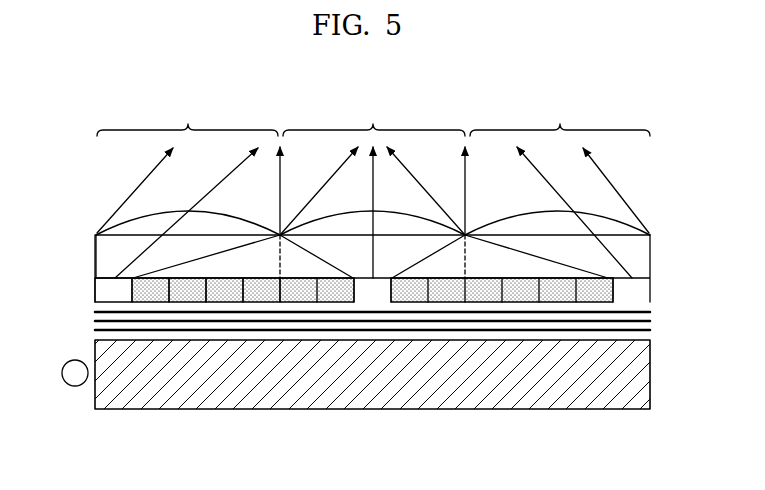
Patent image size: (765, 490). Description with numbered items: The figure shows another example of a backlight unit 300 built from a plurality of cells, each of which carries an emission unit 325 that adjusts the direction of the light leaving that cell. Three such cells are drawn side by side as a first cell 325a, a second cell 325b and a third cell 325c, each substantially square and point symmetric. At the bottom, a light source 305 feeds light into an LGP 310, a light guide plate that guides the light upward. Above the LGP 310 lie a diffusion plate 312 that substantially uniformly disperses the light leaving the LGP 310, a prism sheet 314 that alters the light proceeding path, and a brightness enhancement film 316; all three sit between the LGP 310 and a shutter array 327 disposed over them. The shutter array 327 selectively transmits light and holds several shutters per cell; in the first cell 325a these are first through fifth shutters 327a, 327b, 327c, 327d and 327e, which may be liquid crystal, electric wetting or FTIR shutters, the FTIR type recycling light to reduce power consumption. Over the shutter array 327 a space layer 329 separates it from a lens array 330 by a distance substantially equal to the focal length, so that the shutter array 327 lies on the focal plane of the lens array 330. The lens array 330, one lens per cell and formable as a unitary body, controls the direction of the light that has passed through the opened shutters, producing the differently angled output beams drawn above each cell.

The backlight unit 300 is at (632, 97).
The light source 305 is at (70, 385).
The LGP 310 is at (645, 375).
The diffusion plate 312 is at (650, 330).
The prism sheet 314 is at (650, 321).
The brightness enhancement film 316 is at (650, 312).
The emission unit 325 is at (645, 260).
The first cell 325a is at (188, 191).
The second cell 325b is at (372, 191).
The third cell 325c is at (557, 191).
The shutter array 327 is at (94, 292).
The first shutter 327a is at (113, 297).
The second shutter 327b is at (150, 297).
The third shutter 327c is at (187, 297).
The fourth shutter 327d is at (224, 297).
The fifth shutter 327e is at (261, 297).
The space layer 329 is at (94, 260).
The lens array 330 is at (136, 221).